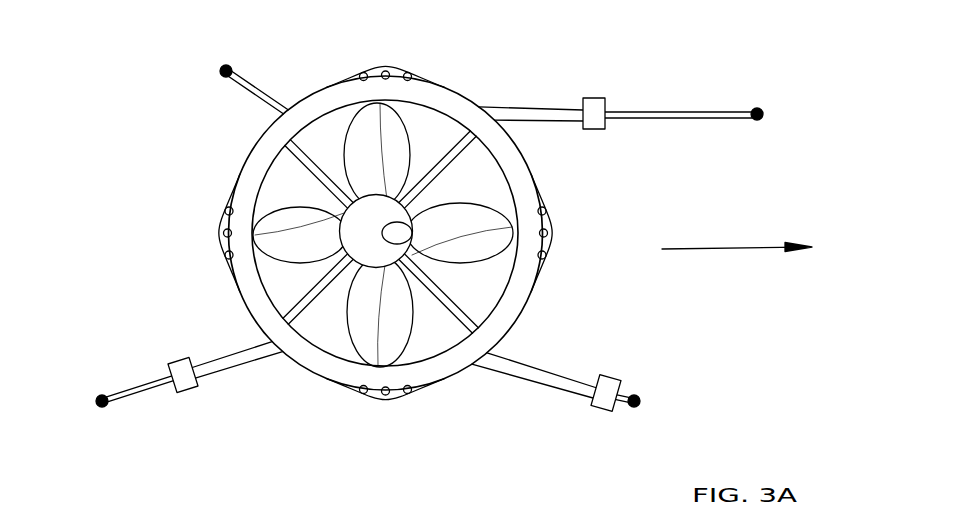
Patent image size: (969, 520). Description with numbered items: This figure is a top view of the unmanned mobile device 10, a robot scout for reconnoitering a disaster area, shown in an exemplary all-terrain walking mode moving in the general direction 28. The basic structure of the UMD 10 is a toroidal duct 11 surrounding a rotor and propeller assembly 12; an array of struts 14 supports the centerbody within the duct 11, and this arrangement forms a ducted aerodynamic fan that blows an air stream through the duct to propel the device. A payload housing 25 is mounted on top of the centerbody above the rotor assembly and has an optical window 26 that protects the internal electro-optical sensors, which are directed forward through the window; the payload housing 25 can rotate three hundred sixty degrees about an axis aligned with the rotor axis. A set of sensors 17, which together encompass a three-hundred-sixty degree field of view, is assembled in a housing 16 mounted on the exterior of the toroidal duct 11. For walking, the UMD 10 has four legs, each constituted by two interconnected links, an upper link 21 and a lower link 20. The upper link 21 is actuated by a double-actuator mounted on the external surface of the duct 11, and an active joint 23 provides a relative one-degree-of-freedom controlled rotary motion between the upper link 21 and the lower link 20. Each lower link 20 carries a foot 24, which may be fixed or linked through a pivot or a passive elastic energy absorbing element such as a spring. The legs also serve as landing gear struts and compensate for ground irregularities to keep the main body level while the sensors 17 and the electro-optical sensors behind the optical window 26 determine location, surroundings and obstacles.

The unmanned mobile device 10 is at (197, 155).
The toroidal duct 11 is at (320, 85).
The rotor and propeller assembly 12 is at (385, 142).
The struts 14 is at (447, 170).
The housing 16 is at (548, 222).
The sensors 17 is at (546, 210).
The lower link 20 is at (245, 90).
The upper link 21 is at (528, 116).
The active joint 23 is at (592, 108).
The foot 24 is at (227, 65).
The payload housing 25 is at (362, 233).
The optical window 26 is at (413, 229).
The general direction 28 is at (722, 250).